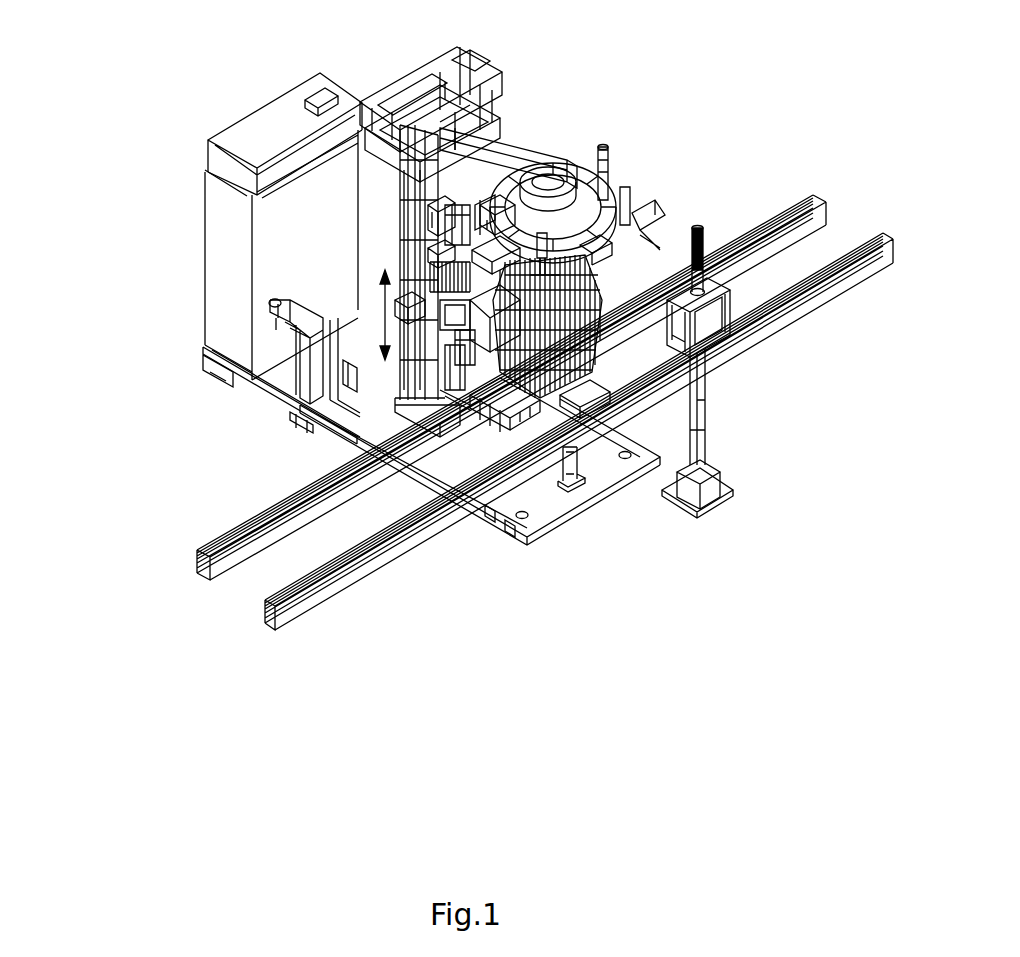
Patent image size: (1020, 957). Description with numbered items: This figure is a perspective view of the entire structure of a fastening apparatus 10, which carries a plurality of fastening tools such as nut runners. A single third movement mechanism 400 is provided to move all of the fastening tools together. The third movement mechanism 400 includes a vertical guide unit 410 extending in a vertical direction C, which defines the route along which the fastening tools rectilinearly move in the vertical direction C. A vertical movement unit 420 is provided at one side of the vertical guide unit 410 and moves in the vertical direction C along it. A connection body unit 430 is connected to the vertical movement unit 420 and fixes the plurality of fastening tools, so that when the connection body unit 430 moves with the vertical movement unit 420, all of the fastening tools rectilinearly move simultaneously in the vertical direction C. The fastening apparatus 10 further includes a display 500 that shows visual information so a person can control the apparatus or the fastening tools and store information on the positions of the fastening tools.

The fastening apparatus 10 is at (611, 129).
The third movement mechanism 400 is at (98, 157).
The vertical guide unit 410 is at (430, 257).
The vertical movement unit 420 is at (430, 218).
The connection body unit 430 is at (490, 213).
The vertical direction C is at (400, 306).
The display 500 is at (722, 310).